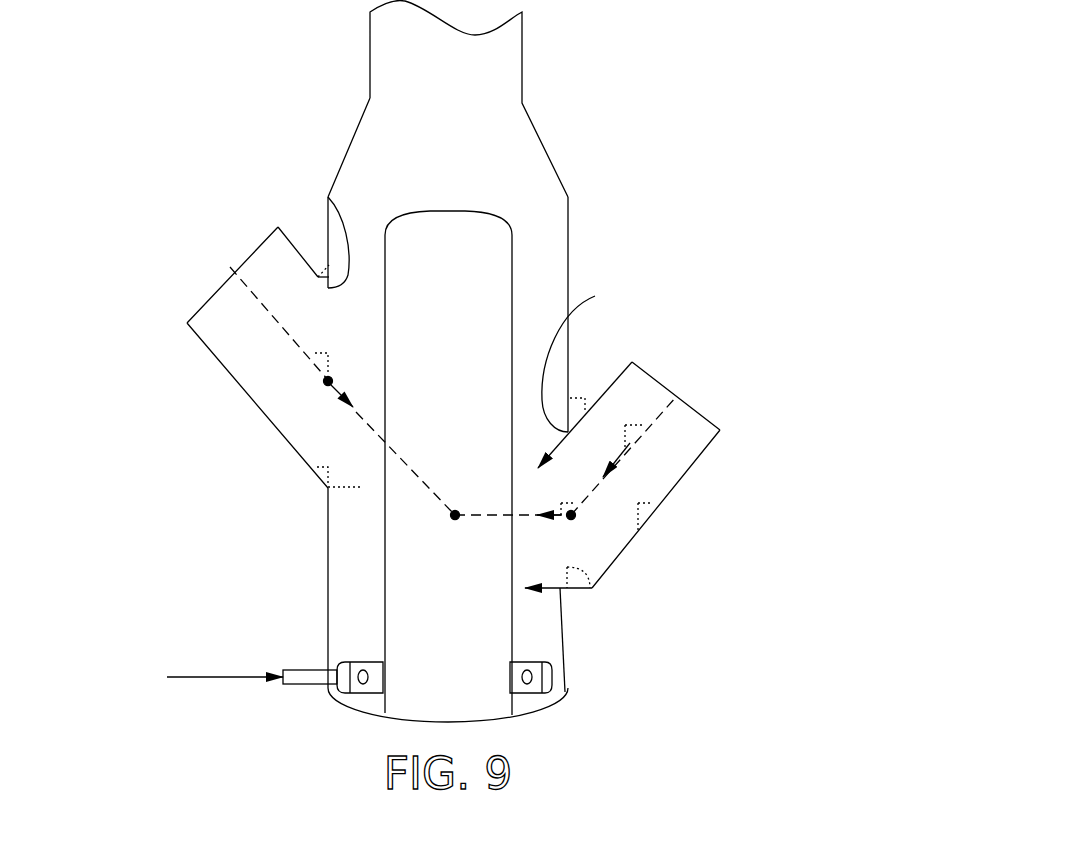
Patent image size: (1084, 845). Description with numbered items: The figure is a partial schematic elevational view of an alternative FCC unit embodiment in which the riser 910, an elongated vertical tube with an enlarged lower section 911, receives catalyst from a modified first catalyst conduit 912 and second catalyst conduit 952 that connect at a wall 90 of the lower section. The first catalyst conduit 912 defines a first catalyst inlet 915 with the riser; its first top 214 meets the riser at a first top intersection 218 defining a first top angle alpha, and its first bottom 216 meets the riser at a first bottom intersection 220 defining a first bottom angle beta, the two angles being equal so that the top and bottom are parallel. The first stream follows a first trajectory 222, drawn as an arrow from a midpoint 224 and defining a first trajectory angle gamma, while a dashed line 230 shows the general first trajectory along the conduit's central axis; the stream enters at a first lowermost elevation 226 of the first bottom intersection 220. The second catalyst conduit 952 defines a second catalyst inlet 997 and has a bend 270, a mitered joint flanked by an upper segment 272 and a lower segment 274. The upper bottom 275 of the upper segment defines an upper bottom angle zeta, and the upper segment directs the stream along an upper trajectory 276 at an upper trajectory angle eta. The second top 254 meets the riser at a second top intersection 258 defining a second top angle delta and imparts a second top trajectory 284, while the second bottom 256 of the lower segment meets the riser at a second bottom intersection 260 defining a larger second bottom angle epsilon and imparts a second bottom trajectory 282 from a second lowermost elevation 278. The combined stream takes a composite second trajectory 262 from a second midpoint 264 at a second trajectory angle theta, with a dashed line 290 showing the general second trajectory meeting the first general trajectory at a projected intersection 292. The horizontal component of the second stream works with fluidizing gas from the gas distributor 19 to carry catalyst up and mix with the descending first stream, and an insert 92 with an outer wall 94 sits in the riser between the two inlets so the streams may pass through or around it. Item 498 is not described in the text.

The riser 910 is at (687, 178).
The enlarged lower section 911 is at (568, 230).
The insert 92 is at (513, 290).
The first top intersection 218 is at (328, 197).
The second top intersection 258 is at (590, 355).
The first top 214 is at (318, 275).
The first top angle alpha is at (318, 277).
The first catalyst inlet 915 is at (325, 335).
The dashed line 230 is at (280, 330).
The first catalyst conduit 912 is at (212, 357).
The first trajectory angle gamma is at (320, 368).
The midpoint 224 is at (326, 385).
The first trajectory 222 is at (333, 392).
The first bottom 216 is at (289, 443).
The first bottom angle beta is at (318, 473).
The first bottom intersection 220 is at (348, 490).
The first lowermost elevation 226 is at (385, 531).
The contact point 498 is at (268, 531).
The projected intersection 292 is at (452, 520).
The outer wall 94 is at (384, 612).
The wall 90 is at (327, 628).
The gas distributor 19 is at (370, 694).
The second top 254 is at (550, 447).
The second top trajectory 284 is at (637, 423).
The second top angle delta is at (580, 398).
The upper trajectory angle eta is at (642, 400).
The dashed line 290 is at (660, 413).
The upper trajectory 276 is at (621, 460).
The upper segment 272 is at (698, 462).
The second trajectory angle theta is at (562, 502).
The second midpoint 264 is at (578, 513).
The second catalyst conduit 952 is at (602, 501).
The upper bottom angle zeta is at (647, 507).
The second trajectory 262 is at (553, 542).
The second catalyst inlet 997 is at (600, 574).
The upper bottom 275 is at (592, 588).
The bend 270 is at (590, 588).
The lower segment 274 is at (587, 588).
The second bottom angle epsilon is at (582, 588).
The second bottom 256 is at (578, 588).
The second bottom intersection 260 is at (574, 588).
The second lowermost elevation 278 is at (570, 588).
The second bottom trajectory 282 is at (552, 588).